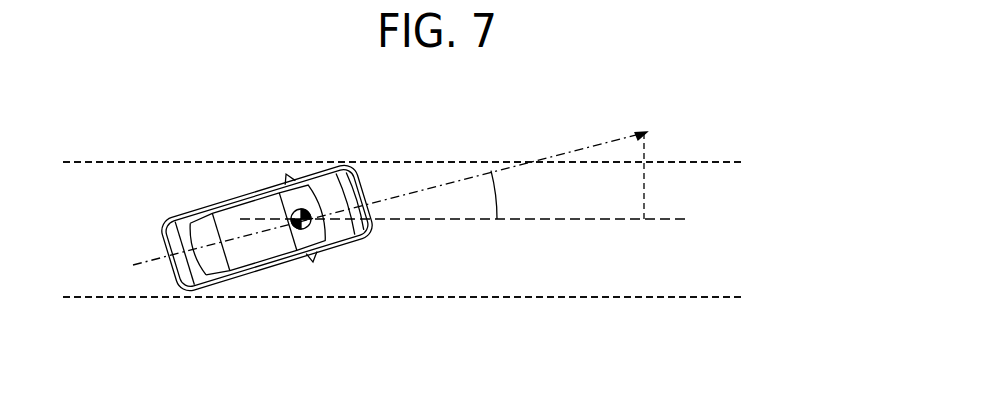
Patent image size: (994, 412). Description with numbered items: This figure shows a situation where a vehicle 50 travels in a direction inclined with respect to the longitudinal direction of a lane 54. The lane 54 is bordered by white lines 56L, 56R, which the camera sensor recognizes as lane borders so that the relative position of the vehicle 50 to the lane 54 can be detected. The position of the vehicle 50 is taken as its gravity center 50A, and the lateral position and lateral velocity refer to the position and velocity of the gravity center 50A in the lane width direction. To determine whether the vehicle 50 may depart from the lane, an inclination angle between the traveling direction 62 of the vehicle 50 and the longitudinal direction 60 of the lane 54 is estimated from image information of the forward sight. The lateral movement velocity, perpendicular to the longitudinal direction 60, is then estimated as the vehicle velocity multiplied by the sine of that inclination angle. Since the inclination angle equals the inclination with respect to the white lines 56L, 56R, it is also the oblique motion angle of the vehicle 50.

The vehicle 50 is at (166, 222).
The gravity center 50A is at (299, 208).
The lane 54 is at (723, 243).
The white line 56L is at (180, 157).
The white line 56R is at (465, 298).
The longitudinal direction 60 is at (540, 222).
The traveling direction 62 is at (450, 172).